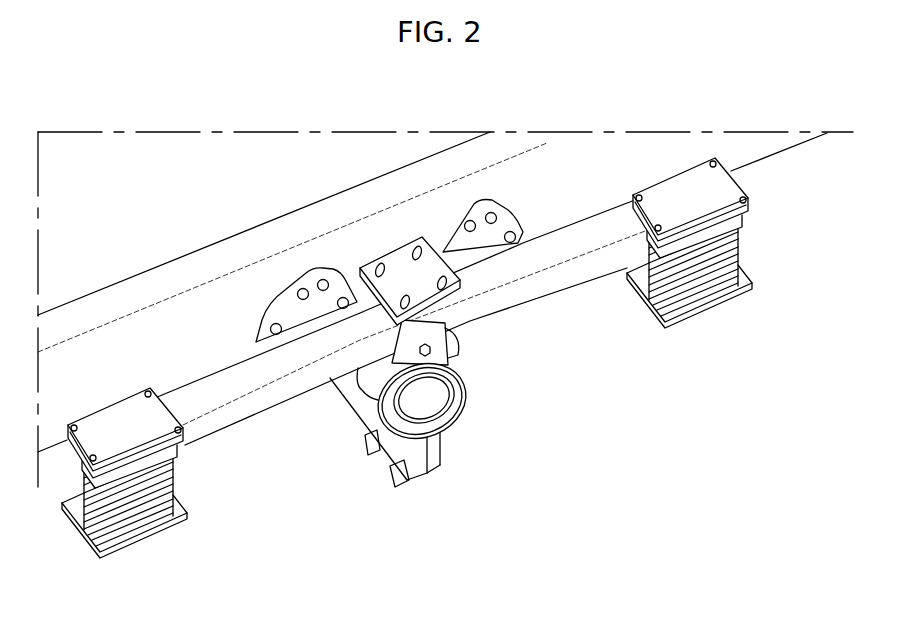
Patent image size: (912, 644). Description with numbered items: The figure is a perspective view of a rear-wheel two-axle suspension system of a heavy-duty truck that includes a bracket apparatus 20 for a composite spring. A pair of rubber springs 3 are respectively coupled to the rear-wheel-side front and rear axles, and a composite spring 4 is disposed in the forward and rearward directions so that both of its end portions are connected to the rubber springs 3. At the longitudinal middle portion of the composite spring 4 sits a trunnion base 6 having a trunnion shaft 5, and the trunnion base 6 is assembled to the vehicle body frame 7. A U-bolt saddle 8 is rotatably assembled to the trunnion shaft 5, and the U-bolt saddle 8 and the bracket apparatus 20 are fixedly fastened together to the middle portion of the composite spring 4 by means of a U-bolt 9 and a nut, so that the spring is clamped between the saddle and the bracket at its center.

The bracket apparatus 20 is at (400, 280).
The vehicle body frame 7 is at (398, 185).
The rubber springs 3 is at (143, 533).
The composite spring 4 is at (258, 410).
The trunnion shaft 5 is at (432, 398).
The trunnion base 6 is at (417, 483).
The U-bolt saddle 8 is at (373, 400).
The U-bolt 9 is at (470, 350).